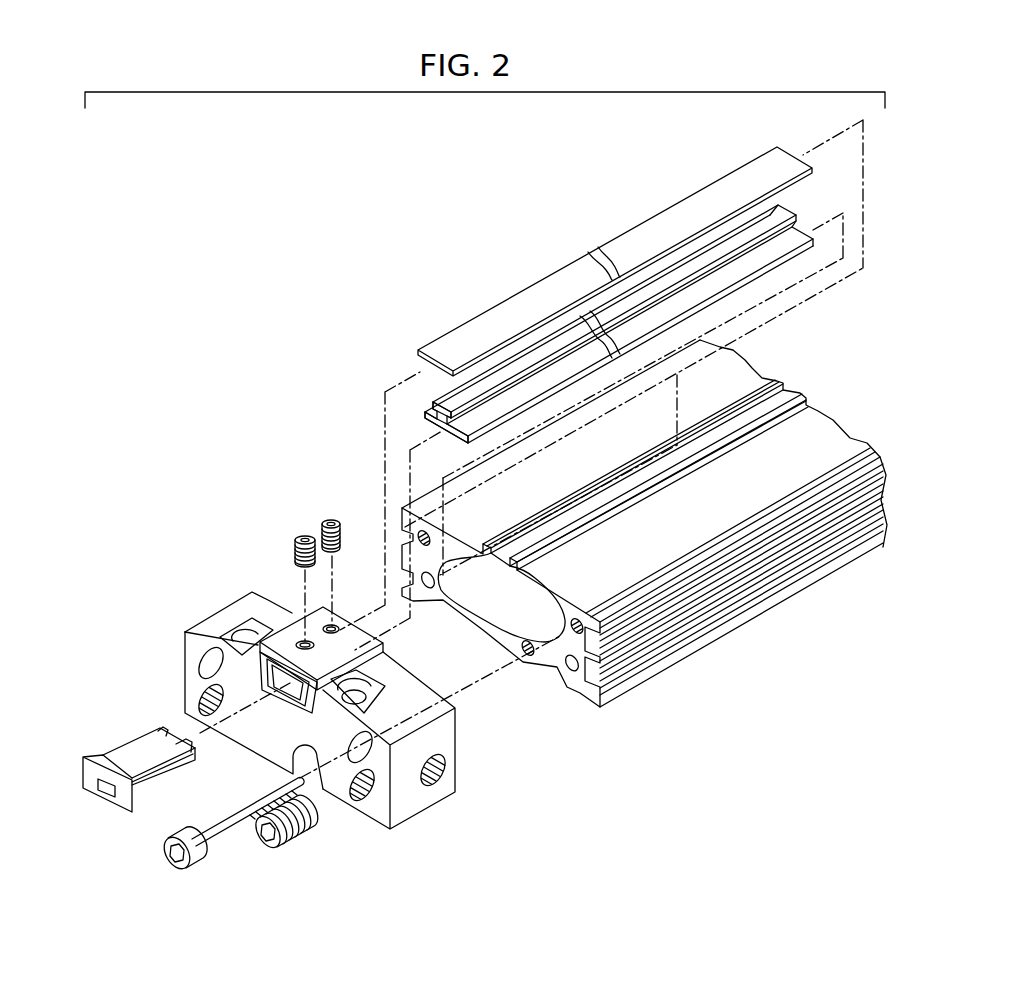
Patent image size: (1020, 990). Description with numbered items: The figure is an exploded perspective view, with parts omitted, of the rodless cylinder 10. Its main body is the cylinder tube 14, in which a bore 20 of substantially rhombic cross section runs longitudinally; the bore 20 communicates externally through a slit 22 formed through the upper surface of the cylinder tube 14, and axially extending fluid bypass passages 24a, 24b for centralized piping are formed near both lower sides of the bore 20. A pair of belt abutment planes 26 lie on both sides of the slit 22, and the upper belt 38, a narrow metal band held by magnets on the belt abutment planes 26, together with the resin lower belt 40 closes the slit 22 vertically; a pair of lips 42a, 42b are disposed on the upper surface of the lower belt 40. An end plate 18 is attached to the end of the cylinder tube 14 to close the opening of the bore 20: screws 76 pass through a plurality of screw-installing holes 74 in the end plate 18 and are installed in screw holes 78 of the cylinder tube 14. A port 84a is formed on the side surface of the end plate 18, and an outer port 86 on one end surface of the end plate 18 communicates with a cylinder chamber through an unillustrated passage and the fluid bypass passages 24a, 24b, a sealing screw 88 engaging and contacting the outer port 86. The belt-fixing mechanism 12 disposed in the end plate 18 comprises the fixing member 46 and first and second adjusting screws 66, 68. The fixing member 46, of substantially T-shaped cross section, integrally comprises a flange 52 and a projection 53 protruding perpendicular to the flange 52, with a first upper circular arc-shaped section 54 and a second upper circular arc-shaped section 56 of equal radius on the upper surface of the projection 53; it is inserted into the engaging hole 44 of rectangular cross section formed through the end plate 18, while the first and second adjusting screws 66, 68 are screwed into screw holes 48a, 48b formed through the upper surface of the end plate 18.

The rodless cylinder 10 is at (258, 309).
The belt-fixing mechanism 12 is at (272, 722).
The cylinder tube 14 is at (647, 520).
The end plate 18 is at (419, 740).
The bore 20 is at (508, 600).
The slit 22 is at (780, 397).
The fluid bypass passage 24a is at (591, 698).
The fluid bypass passage 24b is at (426, 588).
The belt abutment plane 26 is at (762, 380).
The upper belt 38 is at (618, 243).
The lower belt 40 is at (797, 244).
The lip 42a is at (452, 402).
The lip 42b is at (458, 432).
The engaging hole 44 is at (297, 692).
The fixing member 46 is at (133, 774).
The screw hole 48a is at (302, 643).
The screw hole 48b is at (334, 627).
The flange 52 is at (124, 803).
The projection 53 is at (157, 782).
The first upper circular arc-shaped section 54 is at (108, 765).
The second upper circular arc-shaped section 56 is at (159, 730).
The first adjusting screw 66 is at (295, 546).
The second adjusting screw 68 is at (335, 521).
The screw-installing hole 74 is at (205, 660).
The screw 76 is at (165, 850).
The screw hole 78 is at (418, 530).
The port 84a is at (440, 767).
The outer port 86 is at (200, 703).
The sealing screw 88 is at (262, 845).